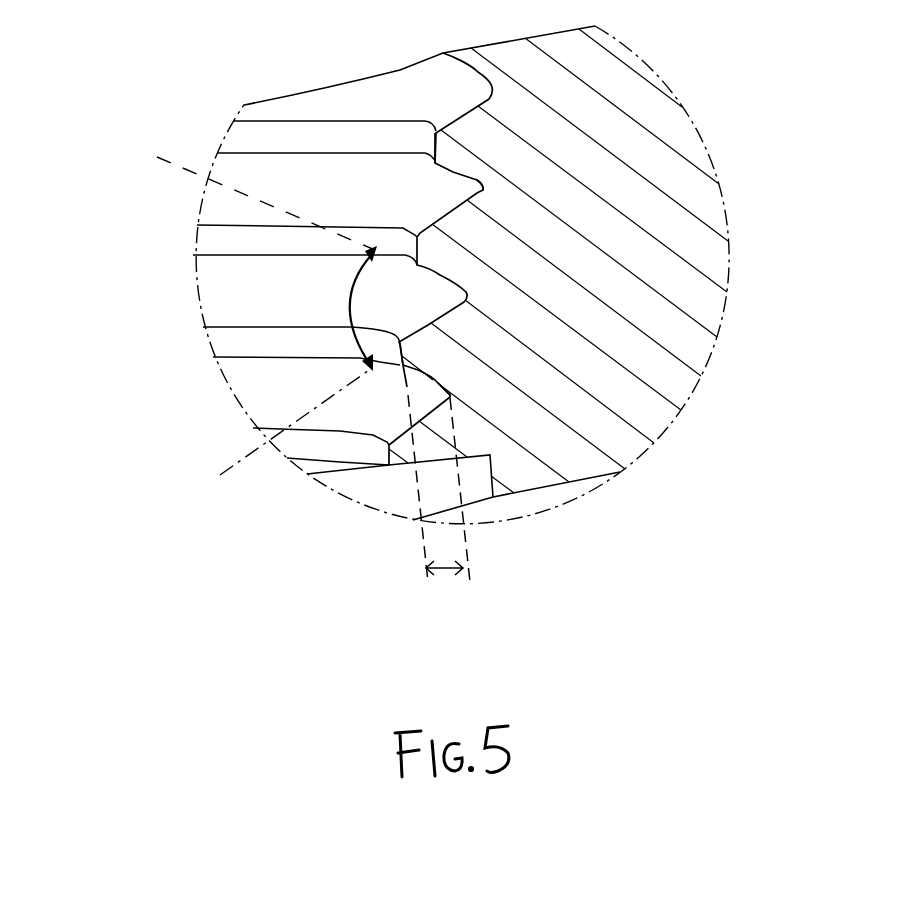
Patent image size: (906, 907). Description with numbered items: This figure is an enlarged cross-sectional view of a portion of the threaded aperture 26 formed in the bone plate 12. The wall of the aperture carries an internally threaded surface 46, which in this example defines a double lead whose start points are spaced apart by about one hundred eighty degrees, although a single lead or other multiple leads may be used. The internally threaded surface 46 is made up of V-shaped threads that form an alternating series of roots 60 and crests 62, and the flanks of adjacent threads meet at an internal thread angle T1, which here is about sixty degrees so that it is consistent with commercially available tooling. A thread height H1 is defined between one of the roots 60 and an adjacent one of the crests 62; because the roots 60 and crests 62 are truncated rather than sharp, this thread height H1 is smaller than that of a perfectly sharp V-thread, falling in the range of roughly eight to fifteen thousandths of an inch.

The bone plate 12 is at (650, 249).
The threaded aperture 26 is at (184, 293).
The internally threaded surface 46 is at (408, 218).
The roots 60 is at (480, 188).
The crests 62 is at (437, 148).
The internal thread angle T1 is at (350, 299).
The thread height H1 is at (445, 570).